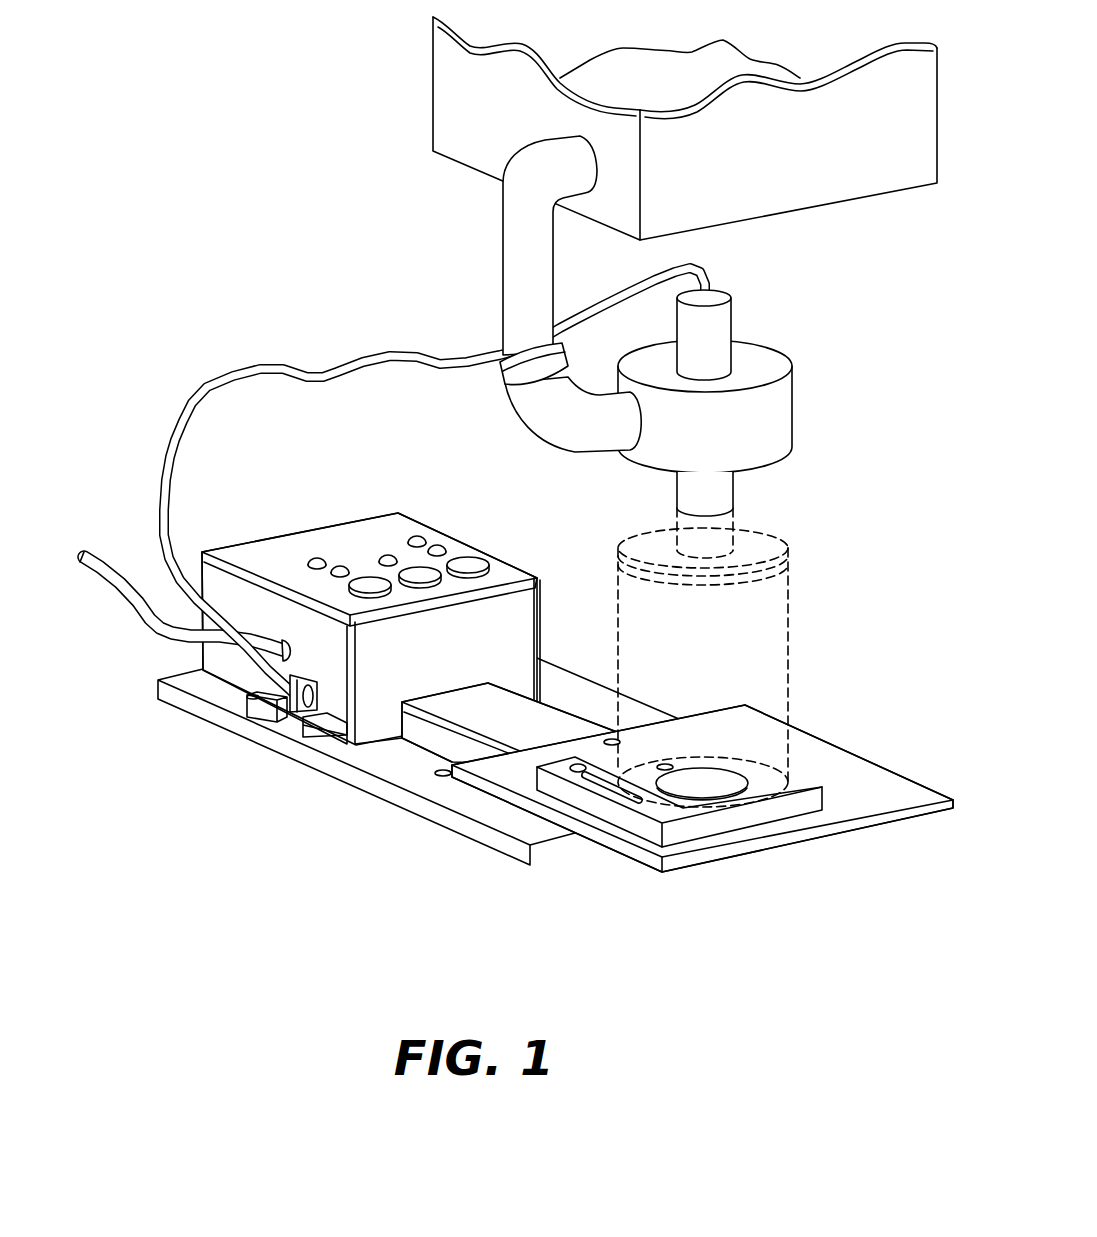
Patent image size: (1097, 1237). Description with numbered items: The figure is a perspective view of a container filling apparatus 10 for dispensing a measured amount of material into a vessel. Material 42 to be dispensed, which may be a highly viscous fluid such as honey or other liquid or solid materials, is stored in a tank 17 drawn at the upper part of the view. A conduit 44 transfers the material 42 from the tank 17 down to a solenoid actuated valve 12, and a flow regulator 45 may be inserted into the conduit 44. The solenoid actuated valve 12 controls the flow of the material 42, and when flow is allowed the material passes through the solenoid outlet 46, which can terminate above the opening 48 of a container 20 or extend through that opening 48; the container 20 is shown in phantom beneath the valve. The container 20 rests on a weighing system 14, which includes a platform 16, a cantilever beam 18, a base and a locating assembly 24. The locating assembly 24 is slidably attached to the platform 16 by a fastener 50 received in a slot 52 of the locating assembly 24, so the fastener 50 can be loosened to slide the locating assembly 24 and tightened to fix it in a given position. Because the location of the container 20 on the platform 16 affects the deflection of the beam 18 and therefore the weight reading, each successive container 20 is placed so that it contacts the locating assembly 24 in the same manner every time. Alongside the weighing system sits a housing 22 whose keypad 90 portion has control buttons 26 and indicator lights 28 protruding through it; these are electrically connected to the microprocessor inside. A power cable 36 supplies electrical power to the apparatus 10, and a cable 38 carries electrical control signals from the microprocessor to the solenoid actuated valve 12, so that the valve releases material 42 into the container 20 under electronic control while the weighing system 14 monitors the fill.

The container filling apparatus 10 is at (238, 337).
The solenoid actuated valve 12 is at (772, 403).
The weighing system 14 is at (195, 747).
The platform 16 is at (888, 800).
The tank 17 is at (787, 198).
The beam 18 is at (458, 709).
The container 20 is at (487, 814).
The housing 22 is at (369, 595).
The locating assembly 24 is at (668, 845).
The control buttons 26 is at (370, 586).
The indicator lights 28 is at (317, 558).
The power cable 36 is at (108, 550).
The cable 38 is at (418, 353).
The material 42 is at (740, 65).
The conduit 44 is at (517, 238).
The flow regulator 45 is at (510, 372).
The solenoid outlet 46 is at (723, 490).
The opening 48 is at (787, 550).
The fastener 50 is at (582, 776).
The slot 52 is at (608, 787).
The keypad 90 is at (273, 550).